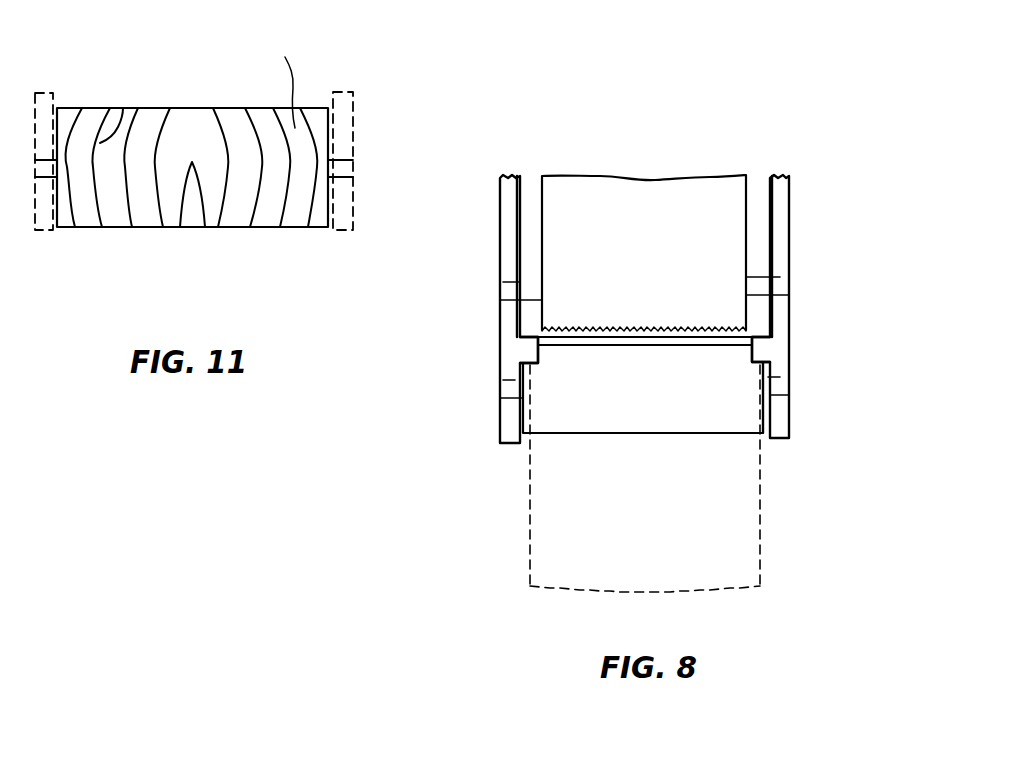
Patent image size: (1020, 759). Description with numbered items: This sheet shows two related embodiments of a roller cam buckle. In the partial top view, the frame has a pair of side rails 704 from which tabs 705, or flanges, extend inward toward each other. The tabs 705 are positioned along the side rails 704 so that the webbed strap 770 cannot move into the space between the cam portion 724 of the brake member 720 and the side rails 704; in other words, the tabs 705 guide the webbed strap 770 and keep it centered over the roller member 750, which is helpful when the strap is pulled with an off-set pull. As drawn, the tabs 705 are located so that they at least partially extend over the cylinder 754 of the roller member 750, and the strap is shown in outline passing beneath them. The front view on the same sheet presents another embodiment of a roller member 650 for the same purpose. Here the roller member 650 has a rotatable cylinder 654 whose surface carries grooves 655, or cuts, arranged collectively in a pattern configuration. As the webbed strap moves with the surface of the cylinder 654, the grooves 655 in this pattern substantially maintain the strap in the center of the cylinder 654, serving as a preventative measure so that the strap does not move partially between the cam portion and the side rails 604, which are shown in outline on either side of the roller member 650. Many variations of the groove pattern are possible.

In FIG. 11, the side rails 604 is at (355, 97).
In FIG. 11, the roller member 650 is at (117, 248).
In FIG. 11, the cylinder 654 is at (284, 79).
In FIG. 11, the grooves 655 is at (123, 108).
In FIG. 8, the side rails 704 is at (508, 235).
In FIG. 8, the tabs 705 is at (530, 355).
In FIG. 8, the brake member 720 is at (688, 172).
In FIG. 8, the cam portion 724 is at (723, 308).
In FIG. 8, the roller member 750 is at (672, 442).
In FIG. 8, the cylinder 754 is at (737, 404).
In FIG. 8, the webbed strap 770 is at (747, 520).